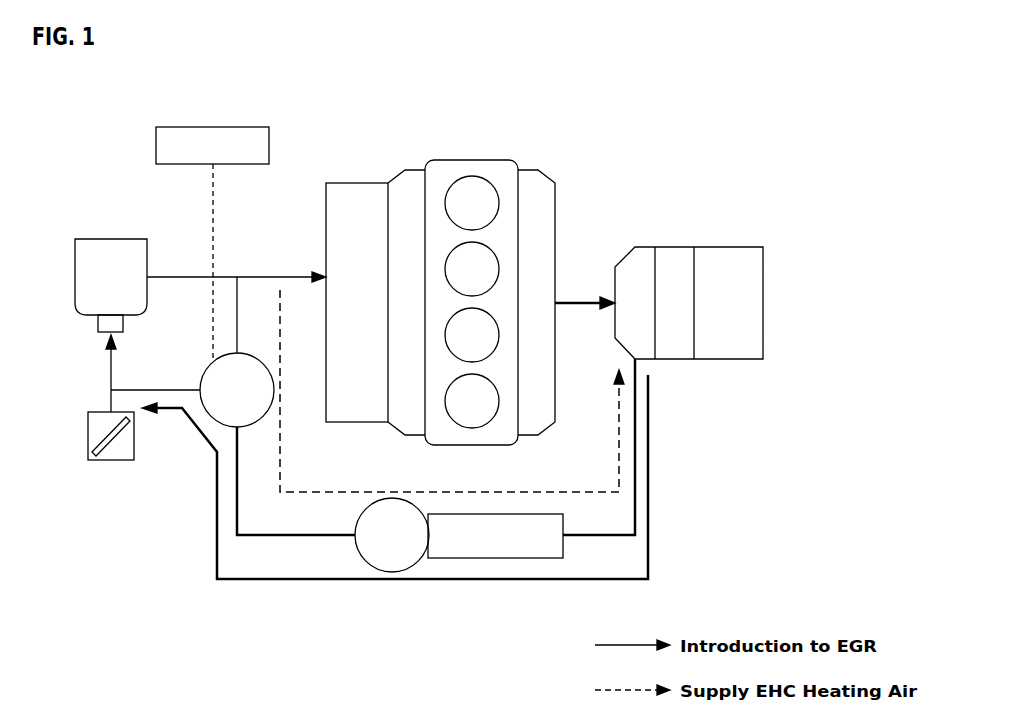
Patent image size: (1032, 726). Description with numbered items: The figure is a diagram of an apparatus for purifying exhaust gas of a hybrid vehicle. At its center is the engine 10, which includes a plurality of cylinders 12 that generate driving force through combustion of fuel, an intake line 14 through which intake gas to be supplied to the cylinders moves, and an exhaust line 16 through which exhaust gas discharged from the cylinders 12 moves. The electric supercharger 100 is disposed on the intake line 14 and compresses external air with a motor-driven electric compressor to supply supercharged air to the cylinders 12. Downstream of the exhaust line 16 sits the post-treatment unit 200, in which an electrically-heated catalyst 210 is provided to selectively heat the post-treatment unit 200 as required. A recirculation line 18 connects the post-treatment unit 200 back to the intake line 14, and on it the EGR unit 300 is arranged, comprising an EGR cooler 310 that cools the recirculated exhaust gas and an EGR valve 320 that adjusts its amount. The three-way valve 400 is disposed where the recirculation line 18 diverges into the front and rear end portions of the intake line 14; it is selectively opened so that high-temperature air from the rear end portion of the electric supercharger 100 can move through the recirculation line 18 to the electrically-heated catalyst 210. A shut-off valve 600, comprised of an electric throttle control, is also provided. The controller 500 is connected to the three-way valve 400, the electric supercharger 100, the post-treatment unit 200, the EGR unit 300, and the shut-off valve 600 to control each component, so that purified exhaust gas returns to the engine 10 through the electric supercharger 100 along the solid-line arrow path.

The engine 10 is at (461, 268).
The cylinders 12 is at (473, 160).
The intake line 14 is at (180, 277).
The exhaust line 16 is at (575, 301).
The recirculation line 18 is at (280, 537).
The electric supercharger 100 is at (110, 239).
The post-treatment unit 200 is at (689, 266).
The electrically-heated catalyst 210 is at (674, 247).
The exhaust gas recirculation unit 300 is at (459, 581).
The EGR cooler 310 is at (495, 575).
The EGR valve 320 is at (392, 572).
The three-way valve 400 is at (258, 355).
The controller 500 is at (269, 145).
The shut-off valve 600 is at (110, 460).